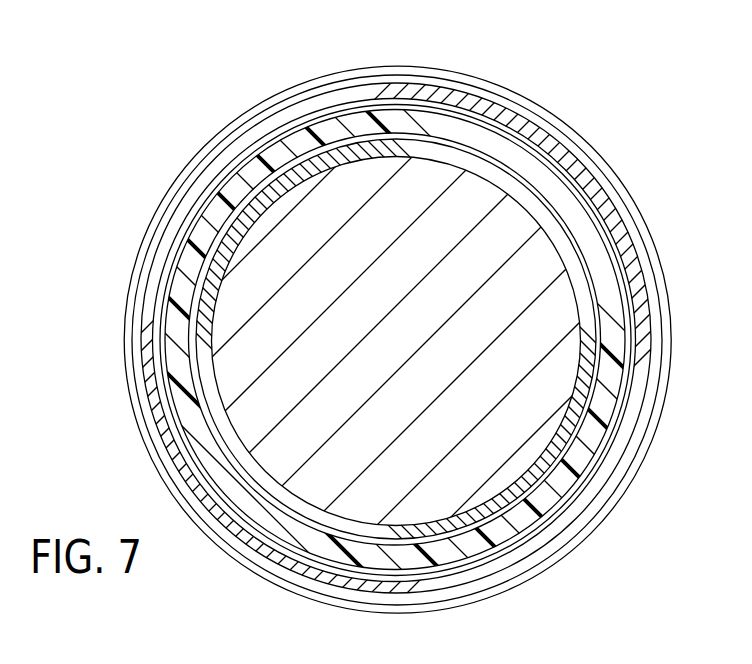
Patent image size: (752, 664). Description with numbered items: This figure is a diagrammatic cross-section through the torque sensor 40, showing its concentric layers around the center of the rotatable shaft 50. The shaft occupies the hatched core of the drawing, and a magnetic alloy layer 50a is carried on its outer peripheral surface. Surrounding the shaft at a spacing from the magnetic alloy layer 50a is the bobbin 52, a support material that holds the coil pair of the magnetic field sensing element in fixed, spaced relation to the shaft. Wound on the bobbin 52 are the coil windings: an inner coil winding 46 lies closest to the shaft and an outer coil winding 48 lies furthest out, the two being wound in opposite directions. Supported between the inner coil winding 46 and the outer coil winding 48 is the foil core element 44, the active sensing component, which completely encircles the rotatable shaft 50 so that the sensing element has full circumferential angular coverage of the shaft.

The torque sensor 40 is at (205, 85).
The foil core element 44 is at (180, 212).
The inner coil winding 46 is at (661, 362).
The outer coil winding 48 is at (612, 500).
The rotatable shaft 50 is at (474, 250).
The magnetic alloy layer 50a is at (553, 163).
The bobbin 52 is at (580, 210).